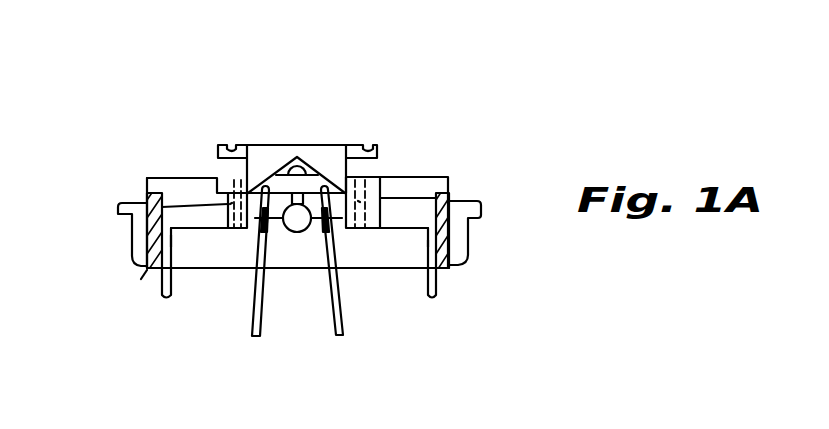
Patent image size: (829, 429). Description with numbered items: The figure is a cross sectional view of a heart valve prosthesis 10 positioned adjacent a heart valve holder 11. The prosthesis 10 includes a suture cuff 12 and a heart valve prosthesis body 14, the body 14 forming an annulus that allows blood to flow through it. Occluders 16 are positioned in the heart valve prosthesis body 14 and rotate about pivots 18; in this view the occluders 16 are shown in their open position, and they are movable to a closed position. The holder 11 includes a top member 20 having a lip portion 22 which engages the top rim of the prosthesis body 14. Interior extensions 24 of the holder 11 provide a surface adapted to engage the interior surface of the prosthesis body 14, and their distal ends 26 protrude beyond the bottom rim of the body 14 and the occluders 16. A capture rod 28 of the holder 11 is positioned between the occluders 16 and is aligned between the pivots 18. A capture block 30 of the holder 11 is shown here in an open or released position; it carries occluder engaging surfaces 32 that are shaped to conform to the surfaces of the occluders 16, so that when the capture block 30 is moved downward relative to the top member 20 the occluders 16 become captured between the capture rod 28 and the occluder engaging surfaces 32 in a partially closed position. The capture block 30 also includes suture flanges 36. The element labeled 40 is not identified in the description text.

The heart valve prosthesis 10 is at (139, 197).
The heart valve holder 11 is at (171, 168).
The suture cuff 12 is at (134, 241).
The heart valve prosthesis body 14 is at (141, 279).
The occluders 16 is at (333, 311).
The pivots 18 is at (307, 231).
The top member 20 is at (199, 186).
The lip portion 22 is at (145, 176).
The interior extensions 24 is at (172, 243).
The distal ends 26 is at (168, 302).
The capture rod 28 is at (340, 145).
The capture block 30 is at (298, 145).
The occluder engaging surfaces 32 is at (296, 160).
The suture flanges 36 is at (233, 146).
The springs 40 is at (228, 204).